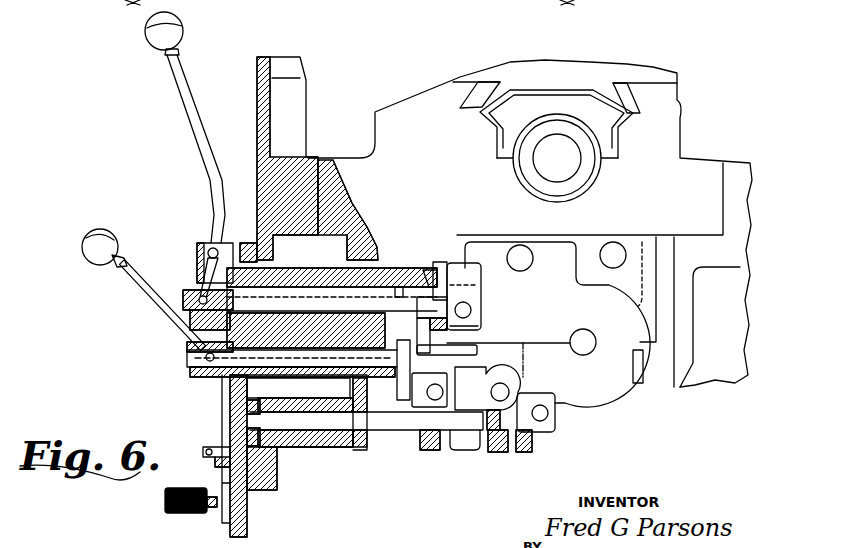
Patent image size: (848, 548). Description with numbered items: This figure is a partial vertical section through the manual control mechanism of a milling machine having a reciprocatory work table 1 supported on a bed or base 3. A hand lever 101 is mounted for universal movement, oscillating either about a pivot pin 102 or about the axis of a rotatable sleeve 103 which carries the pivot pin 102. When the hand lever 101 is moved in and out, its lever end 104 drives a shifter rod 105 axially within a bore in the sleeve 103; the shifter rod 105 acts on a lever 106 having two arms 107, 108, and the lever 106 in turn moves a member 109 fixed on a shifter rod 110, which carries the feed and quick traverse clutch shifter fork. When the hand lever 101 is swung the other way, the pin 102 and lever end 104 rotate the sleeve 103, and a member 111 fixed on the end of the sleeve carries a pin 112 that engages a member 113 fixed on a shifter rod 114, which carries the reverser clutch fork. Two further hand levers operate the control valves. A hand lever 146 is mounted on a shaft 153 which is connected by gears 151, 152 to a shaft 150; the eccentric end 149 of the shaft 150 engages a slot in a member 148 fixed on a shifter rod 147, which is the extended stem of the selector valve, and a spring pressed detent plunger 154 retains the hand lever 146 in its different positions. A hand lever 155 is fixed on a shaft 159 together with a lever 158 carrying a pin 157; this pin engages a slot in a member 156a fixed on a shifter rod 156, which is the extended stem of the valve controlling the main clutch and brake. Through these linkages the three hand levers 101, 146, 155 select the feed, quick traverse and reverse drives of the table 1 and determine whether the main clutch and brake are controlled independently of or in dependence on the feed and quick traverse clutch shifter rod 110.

The table 1 is at (616, 78).
The bed 3 is at (711, 361).
The hand lever 101 is at (191, 112).
The pivot pin 102 is at (206, 243).
The rotatable sleeve 103 is at (248, 243).
The lever end 104 is at (185, 300).
The shifter rod 105 is at (340, 302).
The lever 106 is at (425, 340).
The arm 107 is at (332, 300).
The arm 108 is at (477, 352).
The member 109 is at (475, 388).
The shifter rod 110 is at (505, 390).
The member 111 is at (437, 262).
The pin 112 is at (450, 263).
The member 113 is at (481, 289).
The shifter rod 114 is at (471, 309).
The hand lever 146 is at (217, 486).
The shifter rod 147 is at (548, 413).
The member 148 is at (528, 433).
The eccentric end 149 is at (473, 433).
The shaft 150 is at (363, 431).
The gear 151 is at (232, 410).
The gear 152 is at (225, 433).
The shaft 153 is at (225, 447).
The spring pressed detent plunger 154 is at (213, 522).
The hand lever 155 is at (146, 287).
The shifter rod 156 is at (392, 431).
The member 156a is at (410, 440).
The pin 157 is at (412, 400).
The lever 158 is at (405, 380).
The shaft 159 is at (187, 358).